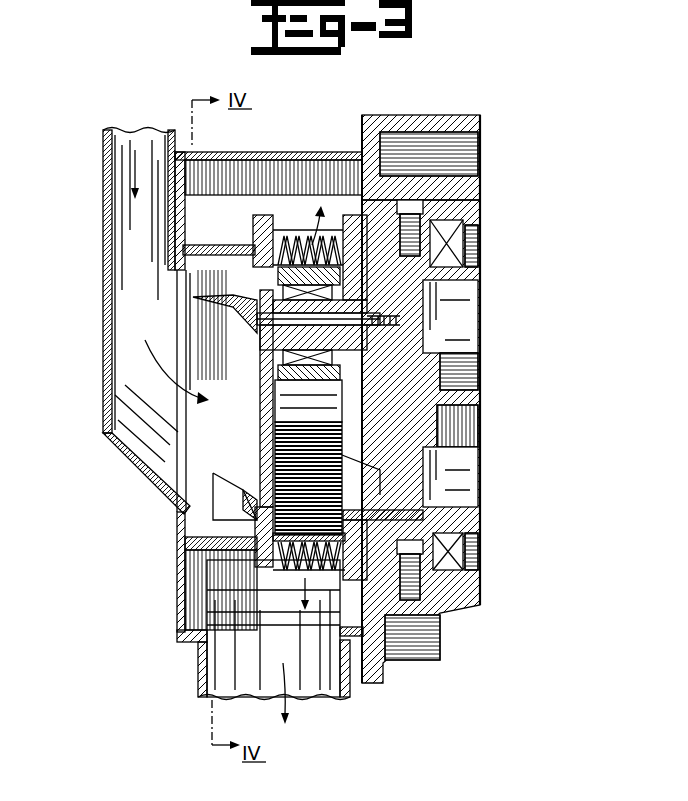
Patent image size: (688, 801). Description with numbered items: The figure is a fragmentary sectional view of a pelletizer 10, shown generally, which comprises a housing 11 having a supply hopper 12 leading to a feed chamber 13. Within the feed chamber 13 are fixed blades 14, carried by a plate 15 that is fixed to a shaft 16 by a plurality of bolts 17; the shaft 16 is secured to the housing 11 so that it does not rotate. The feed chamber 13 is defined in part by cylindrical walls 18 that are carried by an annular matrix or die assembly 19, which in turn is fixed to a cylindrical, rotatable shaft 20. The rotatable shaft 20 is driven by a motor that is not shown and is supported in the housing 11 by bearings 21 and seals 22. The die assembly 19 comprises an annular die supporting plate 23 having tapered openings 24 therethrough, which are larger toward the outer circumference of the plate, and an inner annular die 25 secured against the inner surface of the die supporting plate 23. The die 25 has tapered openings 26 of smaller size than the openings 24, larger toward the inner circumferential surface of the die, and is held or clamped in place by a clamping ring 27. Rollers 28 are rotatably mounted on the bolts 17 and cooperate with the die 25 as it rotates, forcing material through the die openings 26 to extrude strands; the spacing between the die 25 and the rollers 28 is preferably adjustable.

The pelletizer 10 is at (490, 200).
The housing 11 is at (264, 148).
The supply hopper 12 is at (103, 178).
The feed chamber 13 is at (125, 338).
The fixed blades 14 is at (255, 280).
The plate 15 is at (265, 400).
The shaft 16 is at (463, 372).
The bolts 17 is at (373, 333).
The cylindrical walls 18 is at (224, 235).
The die assembly 19 is at (200, 645).
The rotatable shaft 20 is at (467, 267).
The bearings 21 is at (450, 243).
The seals 22 is at (407, 190).
The die supporting plate 23 is at (300, 245).
The tapered openings 24 is at (325, 245).
The inner annular die 25 is at (430, 500).
The tapered openings 26 is at (317, 580).
The clamping ring 27 is at (215, 590).
The rollers 28 is at (433, 412).